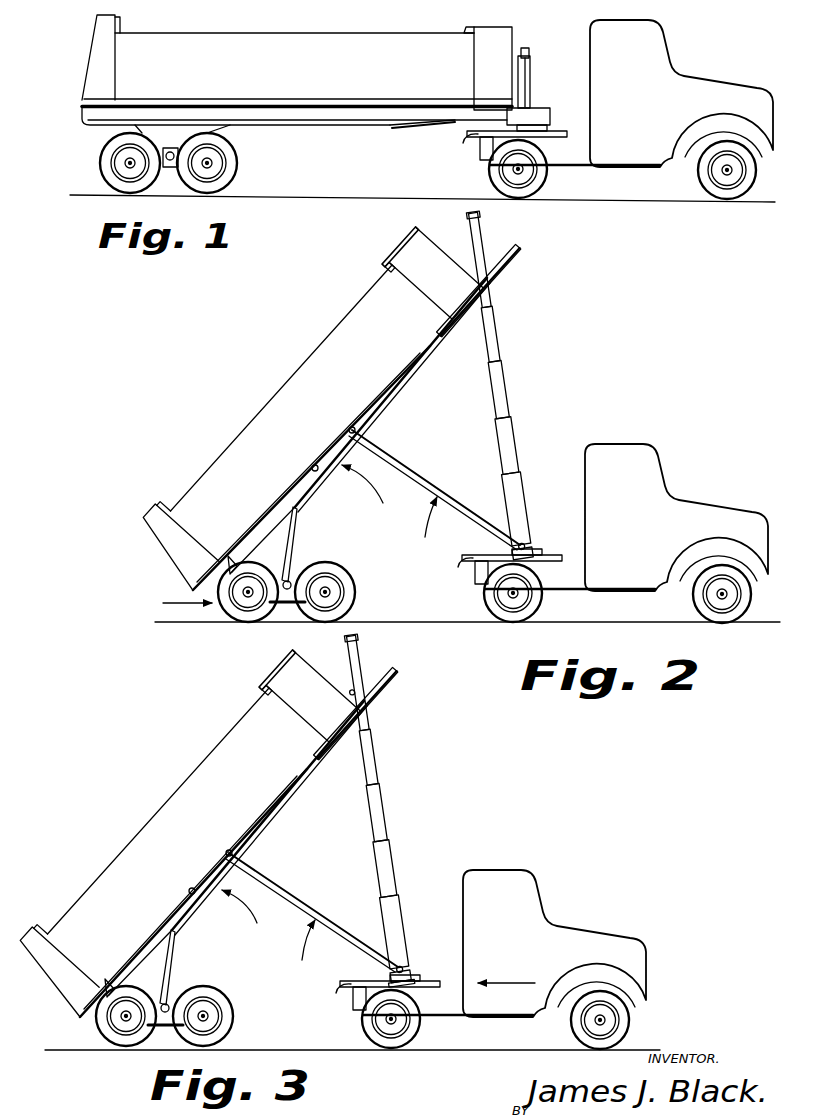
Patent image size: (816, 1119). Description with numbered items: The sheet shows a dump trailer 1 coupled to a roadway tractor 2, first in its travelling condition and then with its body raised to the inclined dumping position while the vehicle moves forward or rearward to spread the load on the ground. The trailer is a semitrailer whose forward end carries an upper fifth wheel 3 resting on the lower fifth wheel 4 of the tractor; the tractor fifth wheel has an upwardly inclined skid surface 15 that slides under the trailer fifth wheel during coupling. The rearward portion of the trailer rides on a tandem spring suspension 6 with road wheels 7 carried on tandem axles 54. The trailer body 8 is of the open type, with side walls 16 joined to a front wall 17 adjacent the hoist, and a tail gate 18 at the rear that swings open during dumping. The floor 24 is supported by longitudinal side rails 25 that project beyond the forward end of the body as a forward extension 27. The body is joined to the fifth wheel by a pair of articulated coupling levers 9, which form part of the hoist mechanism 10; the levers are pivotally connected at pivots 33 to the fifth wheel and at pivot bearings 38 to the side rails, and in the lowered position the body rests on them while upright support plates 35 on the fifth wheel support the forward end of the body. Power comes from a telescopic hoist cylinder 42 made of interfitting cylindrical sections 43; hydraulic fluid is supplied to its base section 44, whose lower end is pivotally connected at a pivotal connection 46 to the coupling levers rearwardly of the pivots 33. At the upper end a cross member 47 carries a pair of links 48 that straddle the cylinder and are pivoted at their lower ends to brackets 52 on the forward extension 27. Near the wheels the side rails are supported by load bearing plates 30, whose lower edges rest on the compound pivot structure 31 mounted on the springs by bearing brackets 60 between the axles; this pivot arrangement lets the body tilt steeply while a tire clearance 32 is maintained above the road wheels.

In FIG. 1, the dump trailer 1 is at (295, 75).
In FIG. 2, the dump trailer 1 is at (317, 392).
In FIG. 3, the dump trailer 1 is at (222, 817).
In FIG. 1, the roadway tractor 2 is at (678, 56).
In FIG. 2, the roadway tractor 2 is at (660, 470).
In FIG. 3, the roadway tractor 2 is at (540, 900).
In FIG. 1, the upper fifth wheel 3 is at (558, 125).
In FIG. 2, the upper fifth wheel 3 is at (552, 558).
In FIG. 3, the upper fifth wheel 3 is at (390, 981).
In FIG. 1, the lower fifth wheel 4 is at (571, 145).
In FIG. 2, the lower fifth wheel 4 is at (562, 562).
In FIG. 3, the lower fifth wheel 4 is at (442, 990).
In FIG. 2, the tandem spring suspension 6 is at (289, 583).
In FIG. 3, the tandem spring suspension 6 is at (172, 1005).
In FIG. 1, the road wheels 7 is at (103, 168).
In FIG. 2, the road wheels 7 is at (225, 603).
In FIG. 3, the road wheels 7 is at (108, 1030).
In FIG. 1, the trailer body 8 is at (297, 56).
In FIG. 2, the trailer body 8 is at (296, 402).
In FIG. 3, the trailer body 8 is at (192, 828).
In FIG. 1, the coupling levers 9 is at (455, 123).
In FIG. 2, the coupling levers 9 is at (415, 470).
In FIG. 3, the coupling levers 9 is at (292, 898).
In FIG. 1, the hoist mechanism 10 is at (552, 78).
In FIG. 2, the hoist mechanism 10 is at (516, 382).
In FIG. 3, the hoist mechanism 10 is at (400, 810).
In FIG. 1, the skid surface 15 is at (472, 147).
In FIG. 2, the skid surface 15 is at (464, 571).
In FIG. 3, the skid surface 15 is at (343, 997).
In FIG. 1, the side walls 16 is at (250, 46).
In FIG. 2, the side walls 16 is at (340, 336).
In FIG. 3, the side walls 16 is at (236, 745).
In FIG. 1, the front wall 17 is at (512, 32).
In FIG. 2, the front wall 17 is at (437, 244).
In FIG. 3, the front wall 17 is at (316, 670).
In FIG. 1, the tail gate 18 is at (86, 68).
In FIG. 2, the tail gate 18 is at (170, 568).
In FIG. 3, the tail gate 18 is at (57, 988).
In FIG. 2, the floor 24 is at (313, 466).
In FIG. 1, the side rails 25 is at (274, 119).
In FIG. 2, the side rails 25 is at (359, 425).
In FIG. 3, the side rails 25 is at (262, 830).
In FIG. 2, the forward extension of the side rails 27 is at (523, 252).
In FIG. 3, the forward extension of the side rails 27 is at (399, 675).
In FIG. 2, the load bearing plates 30 is at (290, 528).
In FIG. 3, the load bearing plates 30 is at (173, 950).
In FIG. 2, the compound pivot structure 31 is at (292, 580).
In FIG. 3, the compound pivot structure 31 is at (169, 1002).
In FIG. 2, the tire clearance 32 is at (229, 558).
In FIG. 3, the tire clearance 32 is at (108, 979).
In FIG. 2, the pivots 33 is at (536, 545).
In FIG. 3, the pivots 33 is at (416, 970).
In FIG. 3, the upright support plates 35 is at (422, 978).
In FIG. 1, the pivot bearings 38 is at (322, 121).
In FIG. 2, the pivot bearings 38 is at (394, 397).
In FIG. 3, the pivot bearings 38 is at (252, 858).
In FIG. 1, the telescopic hoist cylinder 42 is at (535, 88).
In FIG. 2, the telescopic hoist cylinder 42 is at (520, 418).
In FIG. 3, the telescopic hoist cylinder 42 is at (400, 870).
In FIG. 2, the cylindrical sections 43 is at (499, 393).
In FIG. 3, the cylindrical sections 43 is at (377, 805).
In FIG. 2, the base section 44 is at (525, 486).
In FIG. 3, the base section 44 is at (403, 924).
In FIG. 2, the pivotal connection 46 is at (518, 541).
In FIG. 3, the pivotal connection 46 is at (396, 963).
In FIG. 3, the cross member 47 is at (362, 644).
In FIG. 2, the links 48 is at (484, 235).
In FIG. 3, the brackets 52 is at (352, 689).
In FIG. 2, the tandem axles 54 is at (328, 591).
In FIG. 3, the tandem axles 54 is at (206, 1015).
In FIG. 1, the bearing brackets 60 is at (173, 168).